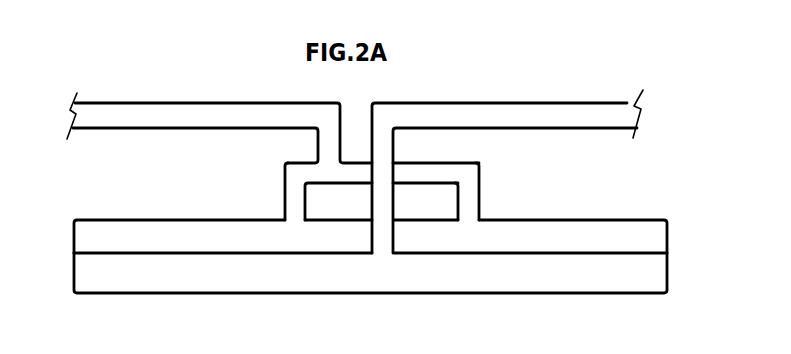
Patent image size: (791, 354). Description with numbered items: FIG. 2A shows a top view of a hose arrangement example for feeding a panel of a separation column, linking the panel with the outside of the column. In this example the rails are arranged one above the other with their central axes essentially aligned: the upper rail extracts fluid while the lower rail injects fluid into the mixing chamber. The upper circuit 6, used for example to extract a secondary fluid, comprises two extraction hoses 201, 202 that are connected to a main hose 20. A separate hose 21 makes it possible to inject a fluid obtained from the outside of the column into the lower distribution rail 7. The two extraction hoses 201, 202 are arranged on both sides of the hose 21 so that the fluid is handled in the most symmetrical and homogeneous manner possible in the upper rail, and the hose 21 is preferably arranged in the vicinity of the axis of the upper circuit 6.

The main hose 20 is at (157, 103).
The hose 21 is at (513, 103).
The extraction hose 202 is at (290, 182).
The extraction hose 201 is at (478, 183).
The upper circuit 6 is at (647, 242).
The lower distribution rail 7 is at (650, 282).